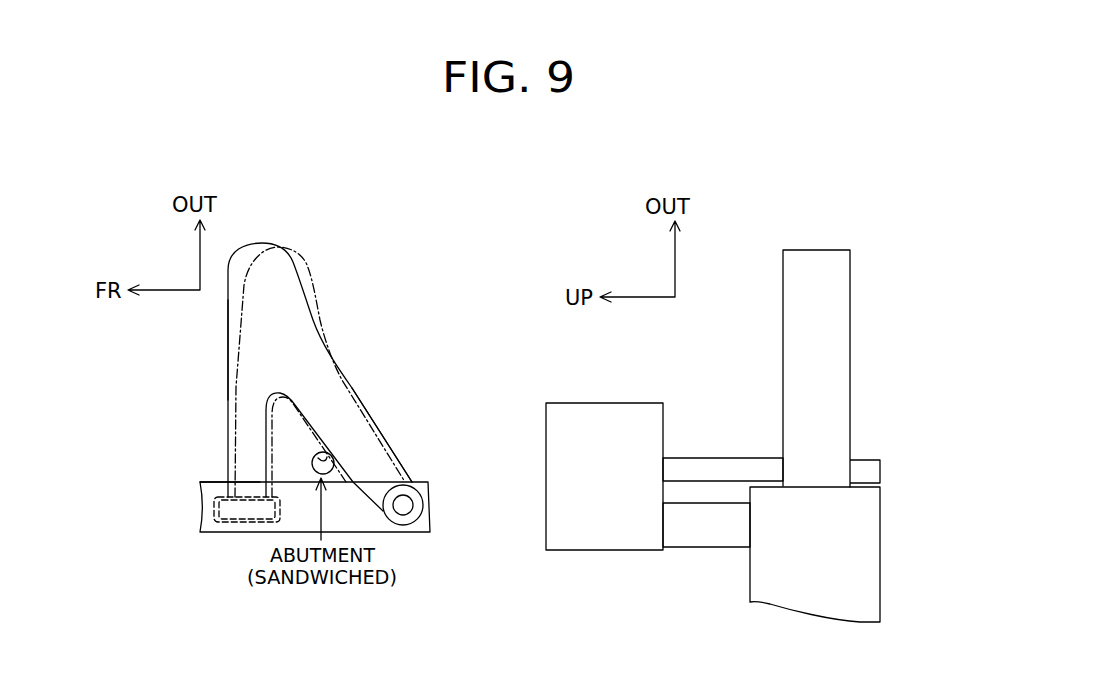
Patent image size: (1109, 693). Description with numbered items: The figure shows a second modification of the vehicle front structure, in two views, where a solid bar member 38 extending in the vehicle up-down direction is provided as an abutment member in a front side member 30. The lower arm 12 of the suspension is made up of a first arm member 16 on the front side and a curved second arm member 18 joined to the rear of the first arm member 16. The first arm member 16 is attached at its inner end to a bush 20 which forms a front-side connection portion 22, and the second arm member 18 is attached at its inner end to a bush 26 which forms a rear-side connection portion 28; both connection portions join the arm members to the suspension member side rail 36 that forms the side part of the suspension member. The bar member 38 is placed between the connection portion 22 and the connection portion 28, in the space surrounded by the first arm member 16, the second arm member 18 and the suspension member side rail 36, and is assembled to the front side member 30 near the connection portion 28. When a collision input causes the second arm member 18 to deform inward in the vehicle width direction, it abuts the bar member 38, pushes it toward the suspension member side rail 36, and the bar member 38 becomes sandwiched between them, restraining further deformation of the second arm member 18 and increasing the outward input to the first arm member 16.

The lower arm 12 is at (364, 331).
The first arm member 16 is at (228, 404).
The second arm member 18 is at (364, 408).
The bush 20 is at (207, 505).
The connection portion 22 is at (221, 477).
The bush 26 is at (424, 504).
The connection portion 28 is at (434, 472).
The front side member 30 is at (606, 402).
The suspension member side rail 36 is at (200, 523).
The bar member 38 is at (332, 458).